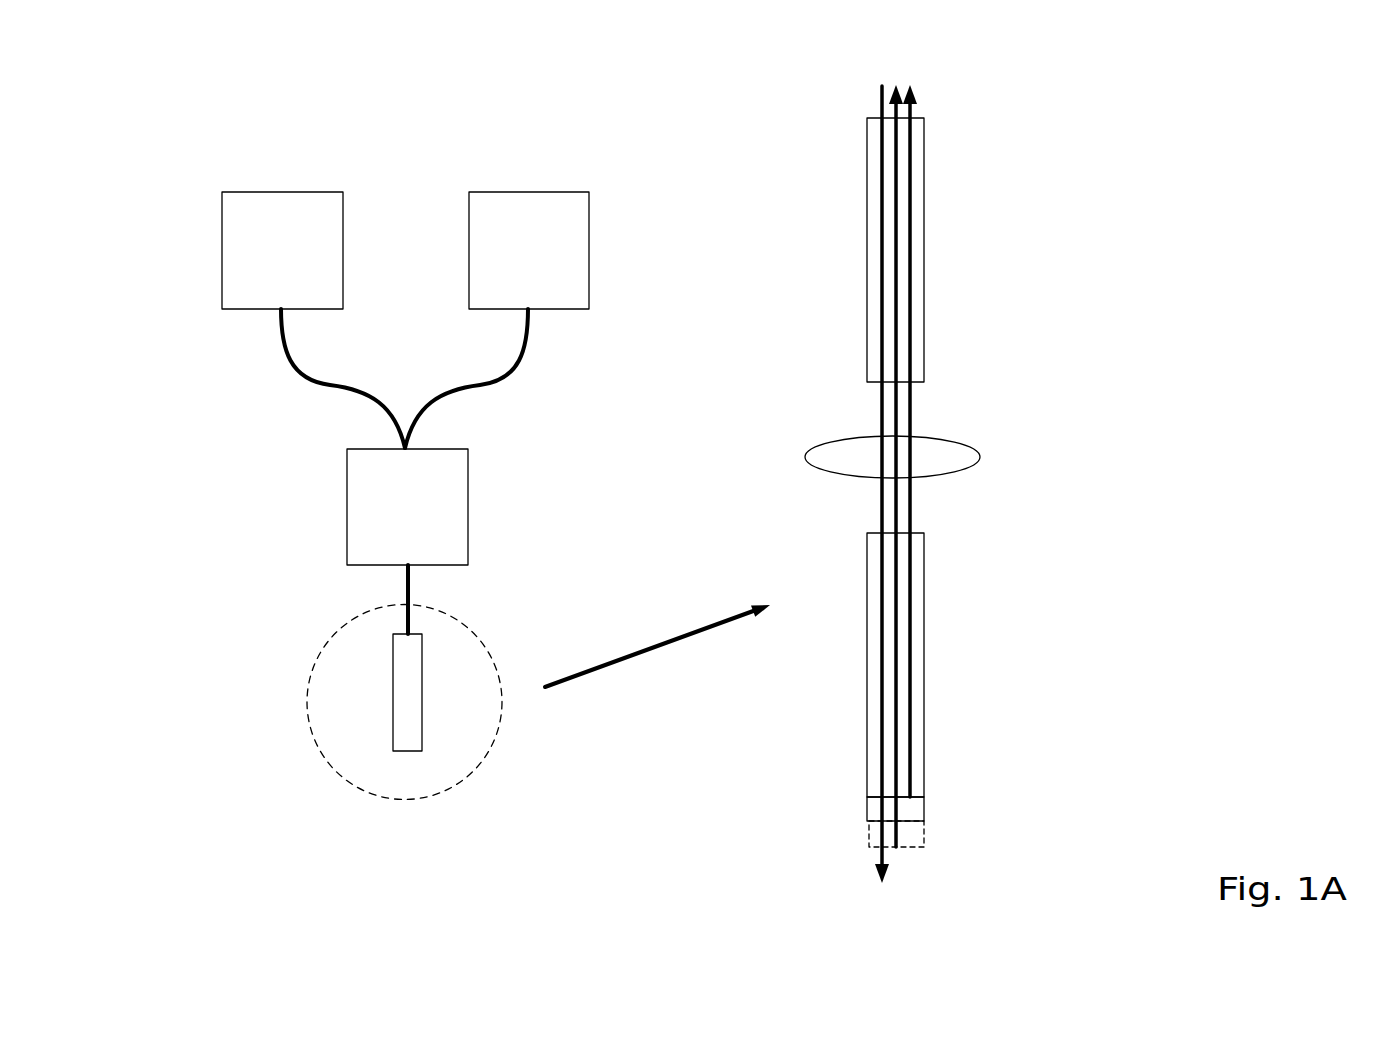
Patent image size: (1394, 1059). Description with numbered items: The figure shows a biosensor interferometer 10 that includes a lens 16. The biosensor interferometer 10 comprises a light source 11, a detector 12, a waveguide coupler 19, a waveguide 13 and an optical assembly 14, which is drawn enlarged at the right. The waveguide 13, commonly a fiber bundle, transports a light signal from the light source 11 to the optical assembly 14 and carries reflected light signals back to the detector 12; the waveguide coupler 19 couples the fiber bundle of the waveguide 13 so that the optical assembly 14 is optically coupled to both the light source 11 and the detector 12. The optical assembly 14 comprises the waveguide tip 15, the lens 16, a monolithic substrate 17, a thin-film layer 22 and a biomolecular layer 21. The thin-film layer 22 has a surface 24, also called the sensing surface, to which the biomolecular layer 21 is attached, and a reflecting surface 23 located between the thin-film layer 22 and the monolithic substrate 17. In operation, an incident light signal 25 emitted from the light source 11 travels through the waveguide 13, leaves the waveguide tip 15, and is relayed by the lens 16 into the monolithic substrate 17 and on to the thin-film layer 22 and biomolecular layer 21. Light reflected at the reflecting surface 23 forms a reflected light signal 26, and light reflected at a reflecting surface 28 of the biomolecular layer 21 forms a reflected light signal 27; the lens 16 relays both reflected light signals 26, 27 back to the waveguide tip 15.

The biosensor interferometer 10 is at (428, 92).
The light source 11 is at (522, 207).
The detector 12 is at (298, 207).
The waveguide 13 is at (563, 322).
The optical assembly 14 is at (330, 762).
The waveguide tip 15 is at (924, 147).
The lens 16 is at (950, 457).
The monolithic substrate 17 is at (924, 657).
The waveguide coupler 19 is at (468, 527).
The biomolecular layer 21 is at (927, 838).
The thin-film layer 22 is at (925, 808).
The reflecting surface 23 is at (878, 803).
The surface 24 is at (877, 822).
The incident light signal 25 is at (877, 880).
The reflected light signal 26 is at (917, 83).
The reflected light signal 27 is at (892, 85).
The reflecting surface 28 is at (913, 847).